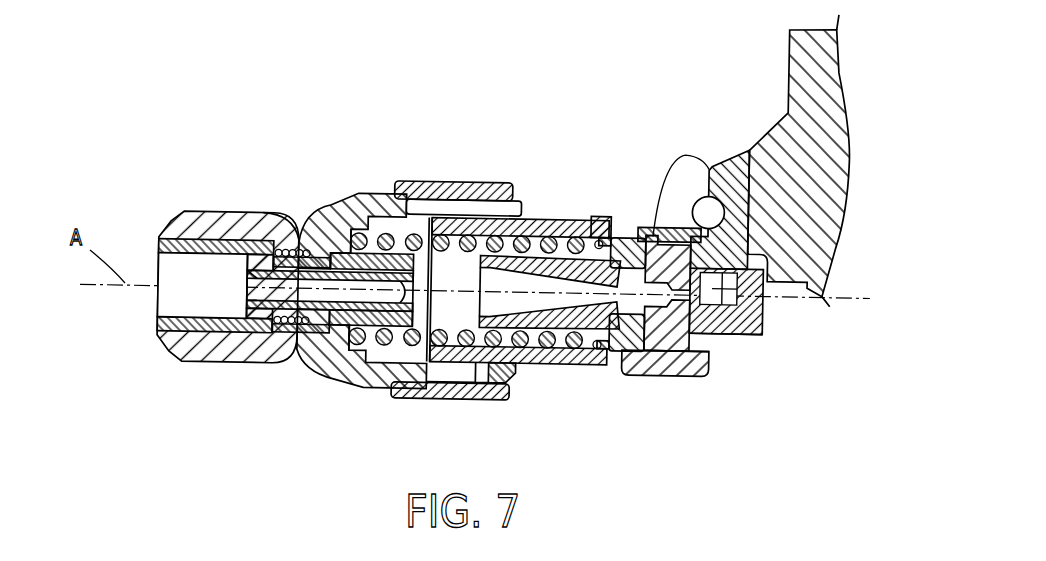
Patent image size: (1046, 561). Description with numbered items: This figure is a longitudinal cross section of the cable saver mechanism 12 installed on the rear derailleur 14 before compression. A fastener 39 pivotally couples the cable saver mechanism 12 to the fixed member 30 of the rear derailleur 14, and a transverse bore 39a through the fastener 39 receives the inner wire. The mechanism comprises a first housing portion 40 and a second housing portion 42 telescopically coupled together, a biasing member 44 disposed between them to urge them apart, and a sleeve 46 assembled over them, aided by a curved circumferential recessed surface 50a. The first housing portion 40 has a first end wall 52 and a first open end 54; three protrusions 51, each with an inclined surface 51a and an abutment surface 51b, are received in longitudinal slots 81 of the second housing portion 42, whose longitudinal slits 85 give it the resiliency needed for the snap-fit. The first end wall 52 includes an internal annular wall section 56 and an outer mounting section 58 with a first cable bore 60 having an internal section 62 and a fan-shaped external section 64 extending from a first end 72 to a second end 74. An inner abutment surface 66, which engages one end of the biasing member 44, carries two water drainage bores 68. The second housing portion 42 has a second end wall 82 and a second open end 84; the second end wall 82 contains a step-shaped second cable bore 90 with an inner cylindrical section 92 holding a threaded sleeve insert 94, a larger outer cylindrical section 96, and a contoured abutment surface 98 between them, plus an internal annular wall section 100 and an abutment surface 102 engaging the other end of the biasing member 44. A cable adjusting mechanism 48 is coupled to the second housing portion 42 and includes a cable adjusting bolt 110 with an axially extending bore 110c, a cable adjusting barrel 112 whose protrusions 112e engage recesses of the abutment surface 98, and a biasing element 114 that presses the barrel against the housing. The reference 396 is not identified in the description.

The cable saver mechanism 12 is at (195, 104).
The rear derailleur 14 is at (752, 95).
The fixed member 30 is at (785, 58).
The fastener 39 is at (682, 378).
The transverse bore 39a is at (662, 284).
The first housing portion 40 is at (600, 220).
The second housing portion 42 is at (342, 190).
The biasing member 44 is at (386, 205).
The sleeve 46 is at (469, 172).
The cable adjusting mechanism 48 is at (259, 194).
The recessed surface 50a is at (525, 370).
The protrusions 51 is at (488, 393).
The inclined surface 51a is at (470, 376).
The abutment surface 51b is at (507, 390).
The first end wall 52 is at (618, 375).
The first open end 54 is at (373, 372).
The internal annular wall section 56 is at (591, 360).
The outer mounting section 58 is at (727, 315).
The first cable bore 60 is at (515, 289).
The internal section 62 is at (553, 230).
The external section 64 is at (767, 350).
The inner abutment surface 66 is at (583, 220).
The water drainage bores 68 is at (600, 234).
The first end 72 is at (695, 363).
The second end 74 is at (722, 297).
The slots 81 is at (410, 397).
The second end wall 82 is at (327, 252).
The second open end 84 is at (535, 222).
The longitudinal slits 85 is at (416, 188).
The second cable bore 90 is at (472, 208).
The inner cylindrical section 92 is at (313, 370).
The threaded sleeve insert 94 is at (355, 238).
The outer cylindrical section 96 is at (307, 367).
The contoured abutment surface 98 is at (302, 205).
The internal annular wall section 100 is at (428, 318).
The abutment surface 102 is at (357, 348).
The cable adjusting bolt 110 is at (168, 350).
The axially extending bore 110c is at (247, 292).
The cable adjusting barrel 112 is at (220, 363).
The protrusions 112e is at (257, 254).
The biasing element 114 is at (270, 357).
The block edge 396 is at (710, 340).